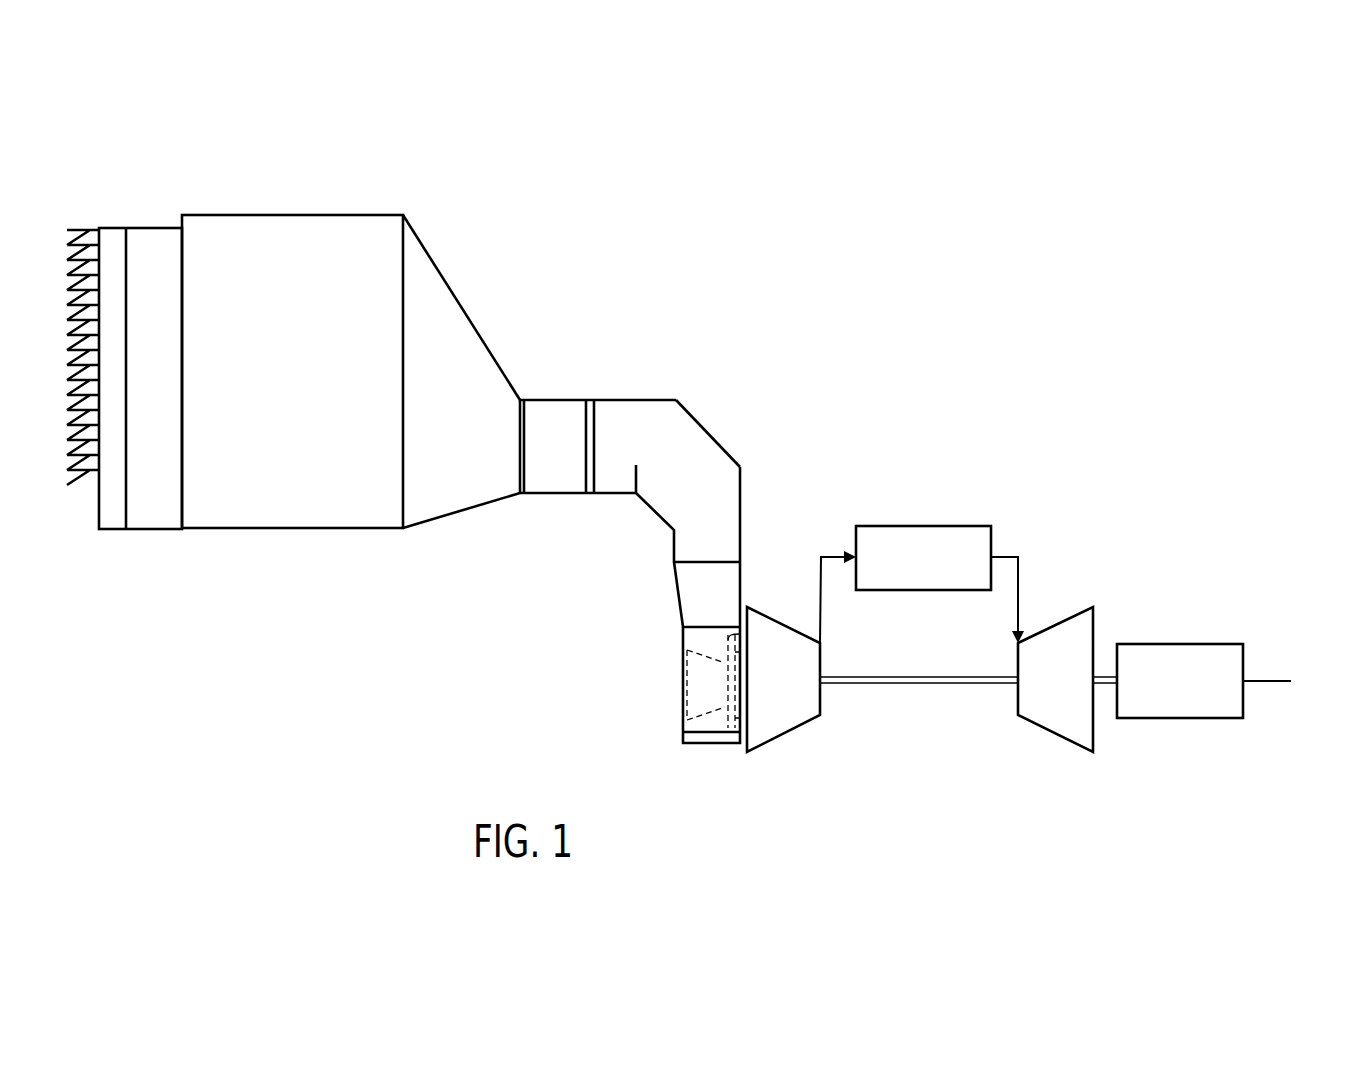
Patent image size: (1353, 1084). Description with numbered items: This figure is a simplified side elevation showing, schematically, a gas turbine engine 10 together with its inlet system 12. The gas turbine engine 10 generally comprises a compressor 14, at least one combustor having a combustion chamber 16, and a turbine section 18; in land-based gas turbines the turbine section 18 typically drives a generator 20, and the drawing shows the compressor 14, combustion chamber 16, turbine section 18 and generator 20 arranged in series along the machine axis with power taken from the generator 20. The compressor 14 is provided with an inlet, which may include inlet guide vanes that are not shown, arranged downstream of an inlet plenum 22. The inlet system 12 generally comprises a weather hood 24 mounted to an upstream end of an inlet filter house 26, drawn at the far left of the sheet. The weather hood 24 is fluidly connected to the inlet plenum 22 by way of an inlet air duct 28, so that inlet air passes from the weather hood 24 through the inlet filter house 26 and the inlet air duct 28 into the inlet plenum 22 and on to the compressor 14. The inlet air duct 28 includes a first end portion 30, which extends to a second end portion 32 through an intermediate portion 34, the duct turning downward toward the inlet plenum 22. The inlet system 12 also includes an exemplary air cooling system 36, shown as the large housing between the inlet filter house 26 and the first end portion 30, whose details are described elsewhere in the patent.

The gas turbine engine 10 is at (1162, 506).
The inlet system 12 is at (570, 542).
The compressor 14 is at (797, 710).
The combustion chamber 16 is at (924, 526).
The turbine section 18 is at (1065, 725).
The generator 20 is at (1175, 718).
The inlet plenum 22 is at (693, 637).
The weather hood 24 is at (82, 485).
The inlet filter house 26 is at (152, 513).
The inlet air duct 28 is at (675, 497).
The first end portion 30 is at (477, 325).
The second end portion 32 is at (742, 590).
The intermediate portion 34 is at (708, 468).
The air cooling system 36 is at (278, 375).